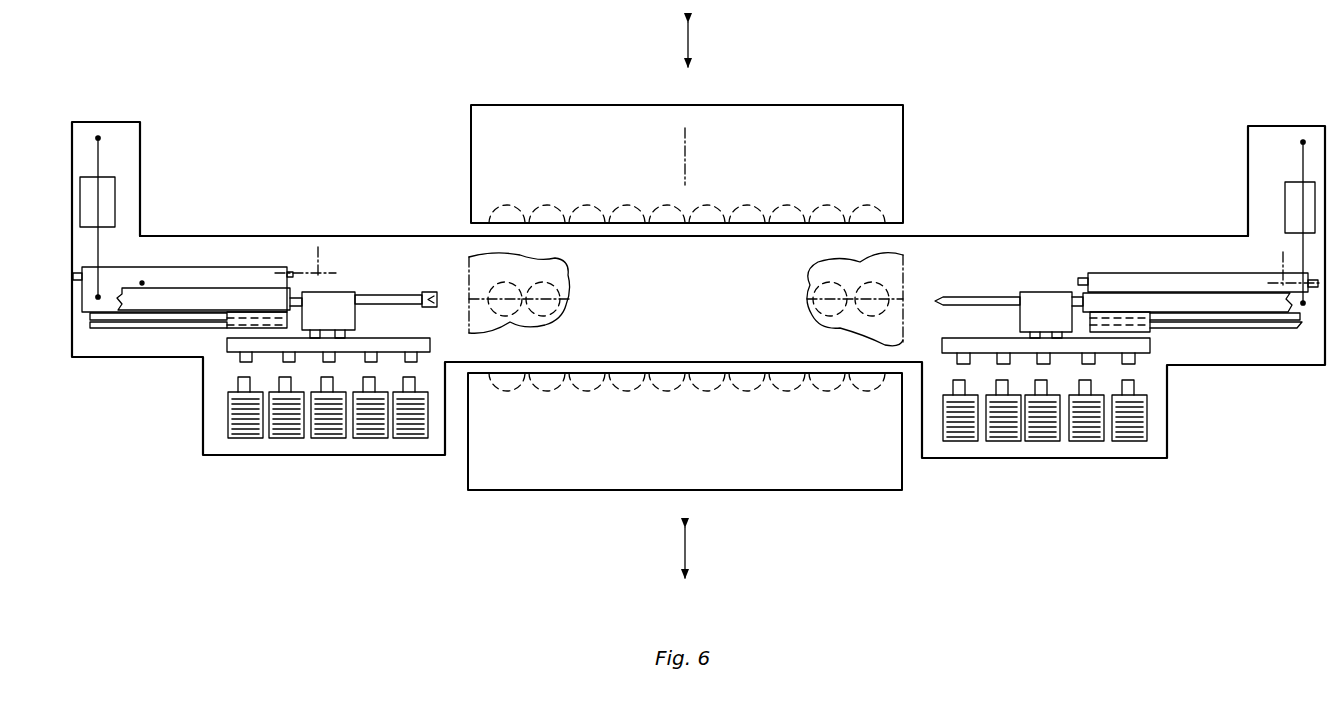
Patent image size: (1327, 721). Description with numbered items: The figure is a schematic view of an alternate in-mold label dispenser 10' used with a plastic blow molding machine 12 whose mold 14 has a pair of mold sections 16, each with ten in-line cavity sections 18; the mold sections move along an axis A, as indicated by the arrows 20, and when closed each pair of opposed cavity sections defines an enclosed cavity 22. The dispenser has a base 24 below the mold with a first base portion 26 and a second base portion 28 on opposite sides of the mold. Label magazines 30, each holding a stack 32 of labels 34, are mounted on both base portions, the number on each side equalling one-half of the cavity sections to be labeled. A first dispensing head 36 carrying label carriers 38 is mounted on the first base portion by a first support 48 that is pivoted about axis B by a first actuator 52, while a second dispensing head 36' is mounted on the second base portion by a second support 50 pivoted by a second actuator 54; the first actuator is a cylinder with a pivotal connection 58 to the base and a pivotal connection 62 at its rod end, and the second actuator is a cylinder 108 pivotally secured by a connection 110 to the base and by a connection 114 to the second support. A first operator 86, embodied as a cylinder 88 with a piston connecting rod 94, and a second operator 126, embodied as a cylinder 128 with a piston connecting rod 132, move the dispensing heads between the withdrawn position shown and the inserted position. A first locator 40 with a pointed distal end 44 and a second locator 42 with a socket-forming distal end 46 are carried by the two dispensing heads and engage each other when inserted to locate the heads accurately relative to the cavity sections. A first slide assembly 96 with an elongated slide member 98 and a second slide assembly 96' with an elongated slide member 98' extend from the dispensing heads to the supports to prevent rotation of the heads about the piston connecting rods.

The in-mold label dispenser 10' is at (1073, 179).
The plastic blow molding machine 12 is at (910, 92).
The mold 14 is at (826, 105).
The mold section 16 is at (781, 105).
The cavity section 18 is at (876, 217).
The arrows 20 is at (690, 47).
The enclosed cavity 22 is at (489, 284).
The base 24 is at (1090, 236).
The first base portion 26 is at (1120, 236).
The second base portion 28 is at (232, 236).
The label magazine 30 is at (411, 442).
The stack 32 is at (232, 440).
The labels 34 is at (255, 432).
The first dispensing head 36 is at (1051, 269).
The second dispensing head 36' is at (384, 244).
The label carriers 38 is at (293, 388).
The first locator 40 is at (976, 297).
The second locator 42 is at (410, 295).
The distal end 44 is at (940, 304).
The distal end 46 is at (425, 306).
The first support 48 is at (1213, 280).
The second support 50 is at (257, 268).
The first actuator 52 is at (1285, 196).
The second actuator 54 is at (116, 184).
The pivotal connection 58 is at (1302, 142).
The pivotal connection 62 is at (1308, 306).
The first operator 86 is at (1152, 284).
The cylinder 88 is at (1192, 297).
The piston connecting rod 94 is at (1070, 292).
The first slide assembly 96 is at (1225, 360).
The elongated slide member 98 is at (1234, 365).
The second slide assembly 96' is at (158, 358).
The elongated slide member 98' is at (158, 362).
The cylinder 108 is at (107, 207).
The connection 110 is at (99, 136).
The connection 114 is at (96, 299).
The second operator 126 is at (143, 280).
The cylinder 128 is at (183, 291).
The piston connecting rod 132 is at (303, 292).
The axis A is at (688, 149).
The axis B is at (1283, 280).